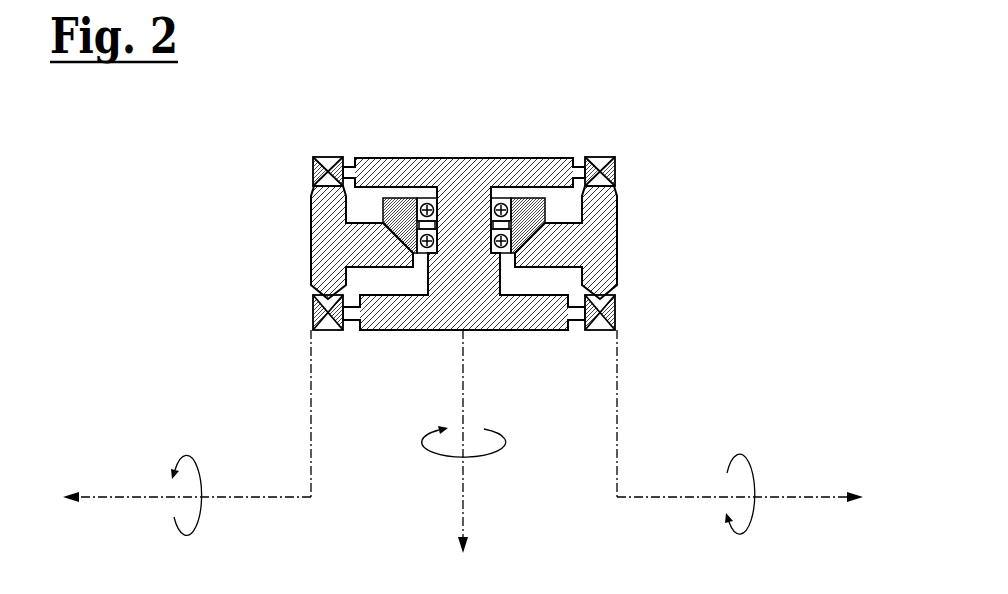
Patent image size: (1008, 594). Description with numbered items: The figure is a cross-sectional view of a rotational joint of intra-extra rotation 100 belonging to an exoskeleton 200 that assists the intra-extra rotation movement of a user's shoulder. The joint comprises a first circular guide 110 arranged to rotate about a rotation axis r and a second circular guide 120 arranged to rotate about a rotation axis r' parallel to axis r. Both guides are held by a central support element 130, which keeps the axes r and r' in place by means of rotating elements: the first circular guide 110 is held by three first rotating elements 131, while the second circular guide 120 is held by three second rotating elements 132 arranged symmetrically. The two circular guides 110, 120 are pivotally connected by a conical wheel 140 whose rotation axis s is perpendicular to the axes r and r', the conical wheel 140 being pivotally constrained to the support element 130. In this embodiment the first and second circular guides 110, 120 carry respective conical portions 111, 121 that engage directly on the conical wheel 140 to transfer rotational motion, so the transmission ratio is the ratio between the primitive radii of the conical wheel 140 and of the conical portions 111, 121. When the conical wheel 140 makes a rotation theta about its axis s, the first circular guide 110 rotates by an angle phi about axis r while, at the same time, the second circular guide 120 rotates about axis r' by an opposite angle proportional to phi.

The rotational joint of intra-extra rotation 100 is at (646, 103).
The exoskeleton 200 is at (808, 77).
The first circular guide 110 is at (322, 217).
The conical portion of first circular guide 111 is at (400, 248).
The second circular guide 120 is at (605, 222).
The conical portion of second circular guide 121 is at (530, 240).
The support element 130 is at (510, 330).
The first rotating elements 131 is at (313, 157).
The second rotating elements 132 is at (617, 157).
The conical wheel 140 is at (402, 212).